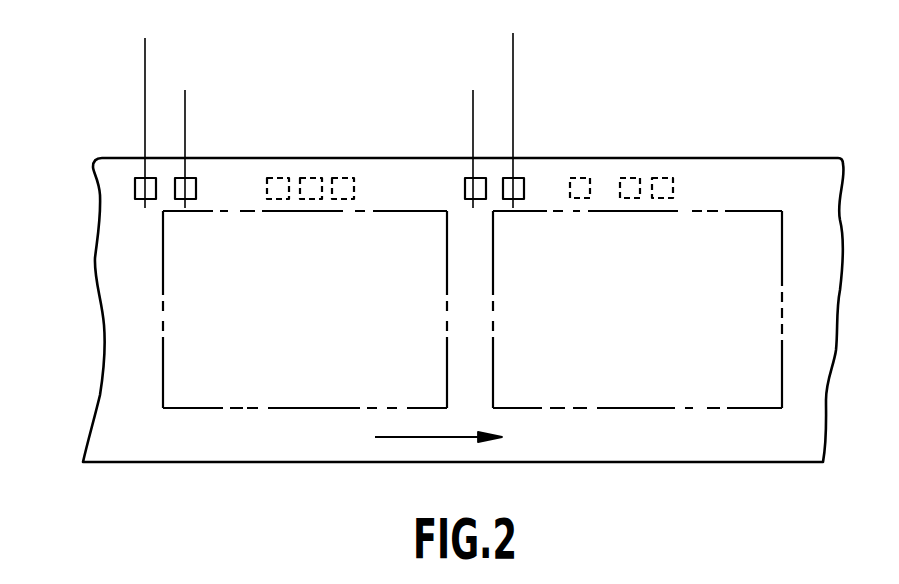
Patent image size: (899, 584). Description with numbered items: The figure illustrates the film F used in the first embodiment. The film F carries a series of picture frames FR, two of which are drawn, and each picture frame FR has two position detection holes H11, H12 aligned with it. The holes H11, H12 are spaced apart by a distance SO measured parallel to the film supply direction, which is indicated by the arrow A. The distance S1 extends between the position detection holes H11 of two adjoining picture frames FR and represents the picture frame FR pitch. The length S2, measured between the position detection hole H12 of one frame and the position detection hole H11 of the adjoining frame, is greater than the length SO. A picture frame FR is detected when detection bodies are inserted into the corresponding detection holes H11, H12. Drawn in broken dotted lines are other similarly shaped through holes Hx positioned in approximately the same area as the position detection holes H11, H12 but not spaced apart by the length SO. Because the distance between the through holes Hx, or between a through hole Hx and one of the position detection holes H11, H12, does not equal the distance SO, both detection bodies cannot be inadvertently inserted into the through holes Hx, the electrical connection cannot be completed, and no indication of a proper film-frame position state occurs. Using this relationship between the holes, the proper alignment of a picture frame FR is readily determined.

The film F is at (805, 176).
The picture frame FR is at (293, 388).
The position detection hole H11 is at (136, 190).
The position detection hole H12 is at (176, 199).
The through holes Hx is at (343, 178).
The distance between position detection holes of adjoining picture frames S1 is at (513, 49).
The length between adjoining picture frame position detection holes S2 is at (473, 98).
The distance between position detection holes SO is at (87, 98).
The arrow showing film supply direction A is at (453, 437).